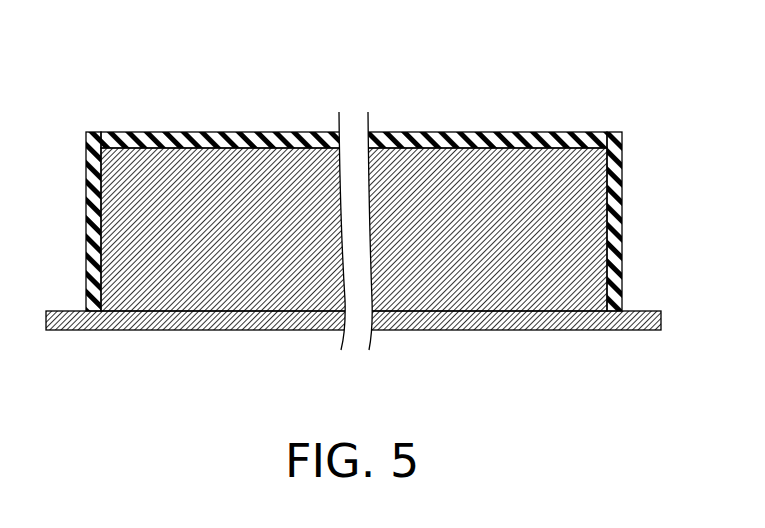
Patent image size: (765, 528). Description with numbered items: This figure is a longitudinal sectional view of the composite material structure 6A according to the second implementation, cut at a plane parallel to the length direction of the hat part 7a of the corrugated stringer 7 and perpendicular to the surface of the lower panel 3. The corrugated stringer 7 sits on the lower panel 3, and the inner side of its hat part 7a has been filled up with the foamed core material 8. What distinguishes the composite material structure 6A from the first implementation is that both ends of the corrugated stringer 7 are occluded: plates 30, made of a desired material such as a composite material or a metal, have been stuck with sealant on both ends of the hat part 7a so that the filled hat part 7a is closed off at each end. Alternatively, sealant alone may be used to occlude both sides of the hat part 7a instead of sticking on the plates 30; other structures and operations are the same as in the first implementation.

The composite material structure 6A is at (348, 171).
The corrugated stringer 7 is at (348, 187).
The hat part 7a is at (522, 132).
The foamed core material 8 is at (242, 215).
The plate 30 is at (83, 228).
The lower panel 3 is at (453, 332).